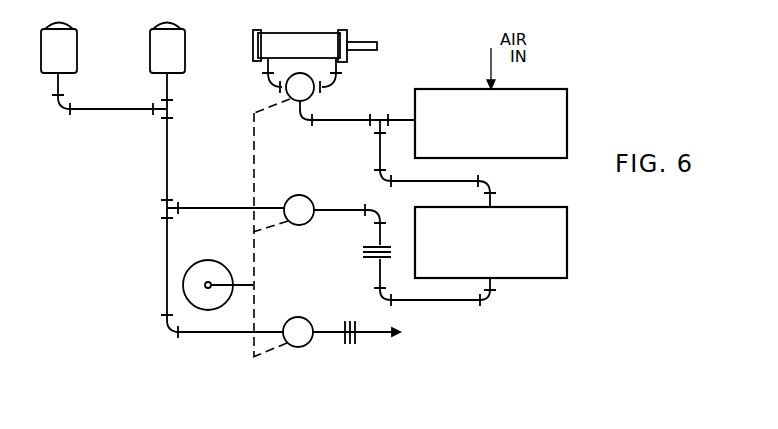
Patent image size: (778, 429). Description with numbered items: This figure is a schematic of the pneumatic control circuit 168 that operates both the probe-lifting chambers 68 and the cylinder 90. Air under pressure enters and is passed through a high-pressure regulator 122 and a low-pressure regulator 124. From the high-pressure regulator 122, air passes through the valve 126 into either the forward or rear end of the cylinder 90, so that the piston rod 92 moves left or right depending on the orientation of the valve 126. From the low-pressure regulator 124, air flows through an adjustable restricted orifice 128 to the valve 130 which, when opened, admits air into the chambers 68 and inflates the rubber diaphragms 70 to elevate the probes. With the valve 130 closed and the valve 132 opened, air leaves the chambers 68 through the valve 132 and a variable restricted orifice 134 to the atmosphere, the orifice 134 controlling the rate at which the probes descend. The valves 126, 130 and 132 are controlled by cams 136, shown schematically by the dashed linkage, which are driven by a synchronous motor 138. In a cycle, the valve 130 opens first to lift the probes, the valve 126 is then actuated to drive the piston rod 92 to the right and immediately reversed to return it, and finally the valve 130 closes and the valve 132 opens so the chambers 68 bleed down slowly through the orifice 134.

The chambers 68 is at (161, 50).
The rubber diaphragms 70 is at (168, 25).
The cylinder 90 is at (284, 40).
The piston rod 92 is at (361, 44).
The high-pressure regulator 122 is at (569, 118).
The low-pressure regulator 124 is at (569, 247).
The valve 126 is at (296, 102).
The adjustable restricted orifice 128 is at (362, 254).
The valve 130 is at (309, 198).
The valve 132 is at (299, 317).
The variable restricted orifice 134 is at (350, 345).
The cams 136 is at (253, 226).
The synchronous motor 138 is at (233, 281).
The pneumatic control circuit 168 is at (129, 333).